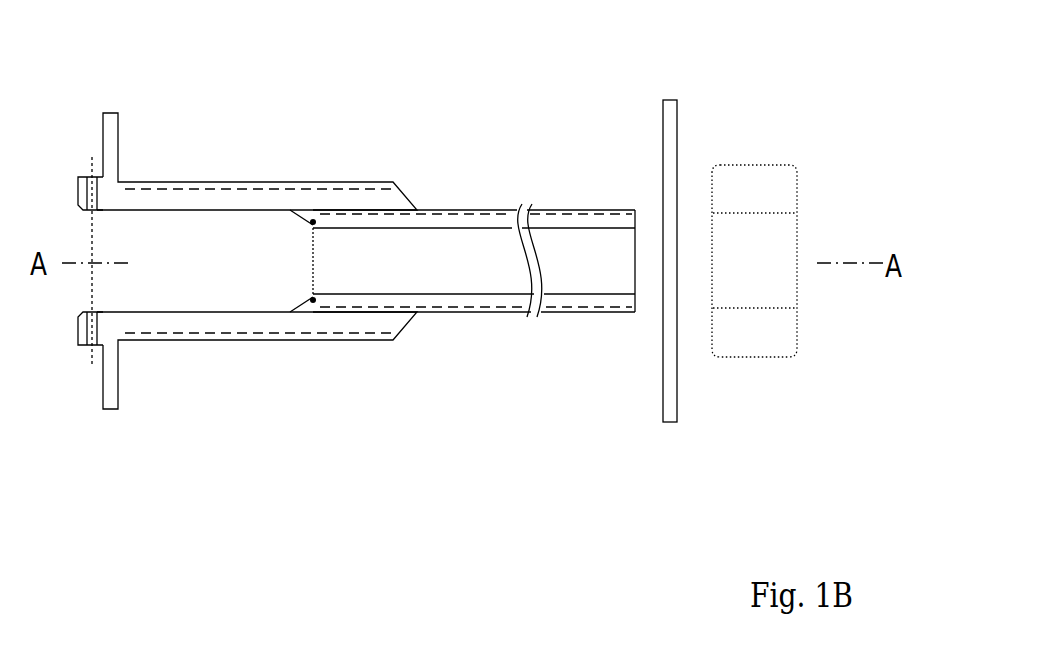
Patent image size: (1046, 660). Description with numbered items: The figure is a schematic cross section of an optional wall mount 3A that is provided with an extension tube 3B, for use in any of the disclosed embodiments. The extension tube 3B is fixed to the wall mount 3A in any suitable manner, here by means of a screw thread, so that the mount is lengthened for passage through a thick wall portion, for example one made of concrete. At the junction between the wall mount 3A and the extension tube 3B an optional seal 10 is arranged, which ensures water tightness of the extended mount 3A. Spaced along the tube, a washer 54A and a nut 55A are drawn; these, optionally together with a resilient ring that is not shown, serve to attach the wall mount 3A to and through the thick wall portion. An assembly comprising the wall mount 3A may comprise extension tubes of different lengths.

The wall mount 3A is at (330, 172).
The extension tube 3B is at (455, 216).
The seal 10 is at (313, 300).
The washer 54A is at (667, 116).
The nut 55A is at (747, 182).